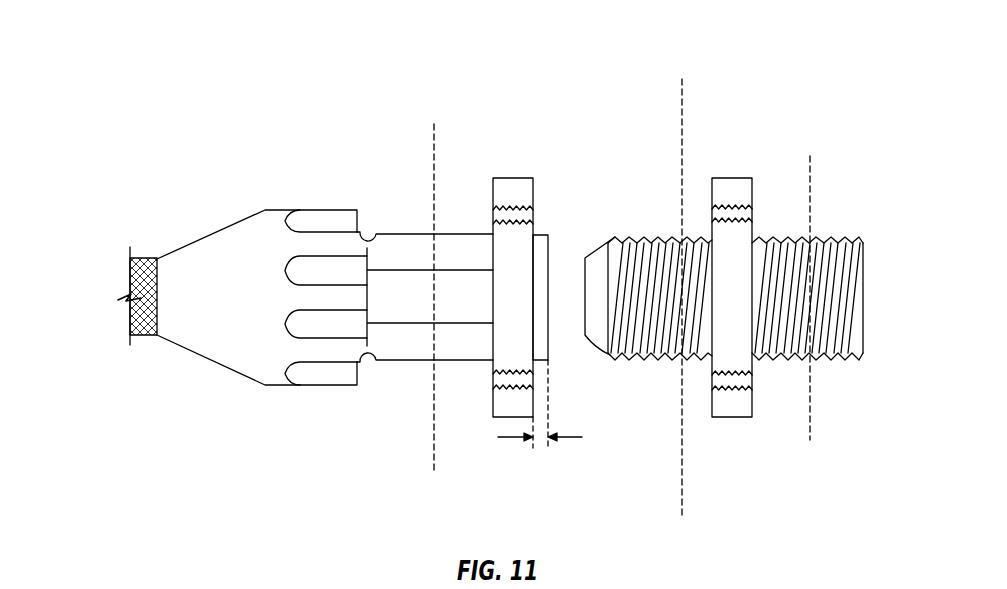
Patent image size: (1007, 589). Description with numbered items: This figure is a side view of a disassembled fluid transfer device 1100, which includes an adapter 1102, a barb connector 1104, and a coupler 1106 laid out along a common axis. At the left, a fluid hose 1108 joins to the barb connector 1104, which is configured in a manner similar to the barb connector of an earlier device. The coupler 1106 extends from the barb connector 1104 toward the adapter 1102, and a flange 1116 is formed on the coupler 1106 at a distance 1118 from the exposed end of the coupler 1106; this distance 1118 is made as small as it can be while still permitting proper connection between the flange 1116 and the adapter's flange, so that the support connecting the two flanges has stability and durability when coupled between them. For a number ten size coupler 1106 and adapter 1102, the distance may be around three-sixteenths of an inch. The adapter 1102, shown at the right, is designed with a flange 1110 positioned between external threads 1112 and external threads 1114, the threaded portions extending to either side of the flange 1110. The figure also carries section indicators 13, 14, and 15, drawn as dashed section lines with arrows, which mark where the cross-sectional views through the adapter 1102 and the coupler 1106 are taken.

The fluid transfer device 1100 is at (230, 115).
The adapter 1102 is at (670, 393).
The barb connector 1104 is at (265, 210).
The coupler 1106 is at (413, 361).
The fluid hose 1108 is at (150, 258).
The flange 1110 is at (733, 178).
The external threads 1112 is at (548, 242).
The external threads 1114 is at (675, 238).
The flange 1116 is at (533, 197).
The distance 1118 is at (547, 446).
The section line 13- 13 is at (706, 518).
The section line 14- 14 is at (478, 472).
The section line 15- 15 is at (787, 440).